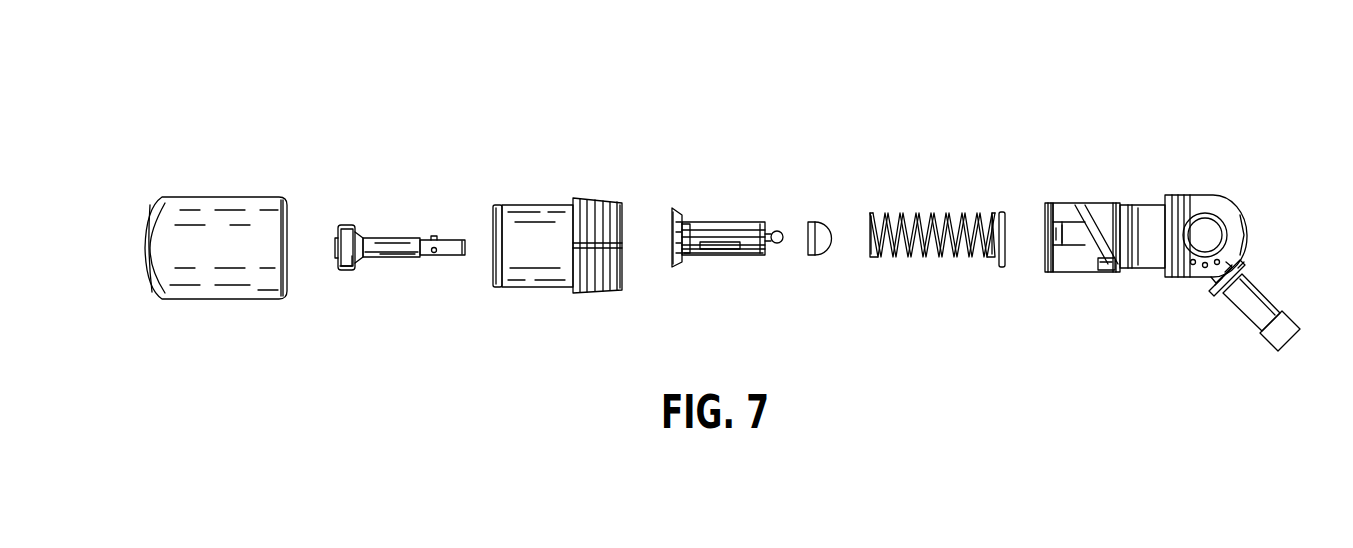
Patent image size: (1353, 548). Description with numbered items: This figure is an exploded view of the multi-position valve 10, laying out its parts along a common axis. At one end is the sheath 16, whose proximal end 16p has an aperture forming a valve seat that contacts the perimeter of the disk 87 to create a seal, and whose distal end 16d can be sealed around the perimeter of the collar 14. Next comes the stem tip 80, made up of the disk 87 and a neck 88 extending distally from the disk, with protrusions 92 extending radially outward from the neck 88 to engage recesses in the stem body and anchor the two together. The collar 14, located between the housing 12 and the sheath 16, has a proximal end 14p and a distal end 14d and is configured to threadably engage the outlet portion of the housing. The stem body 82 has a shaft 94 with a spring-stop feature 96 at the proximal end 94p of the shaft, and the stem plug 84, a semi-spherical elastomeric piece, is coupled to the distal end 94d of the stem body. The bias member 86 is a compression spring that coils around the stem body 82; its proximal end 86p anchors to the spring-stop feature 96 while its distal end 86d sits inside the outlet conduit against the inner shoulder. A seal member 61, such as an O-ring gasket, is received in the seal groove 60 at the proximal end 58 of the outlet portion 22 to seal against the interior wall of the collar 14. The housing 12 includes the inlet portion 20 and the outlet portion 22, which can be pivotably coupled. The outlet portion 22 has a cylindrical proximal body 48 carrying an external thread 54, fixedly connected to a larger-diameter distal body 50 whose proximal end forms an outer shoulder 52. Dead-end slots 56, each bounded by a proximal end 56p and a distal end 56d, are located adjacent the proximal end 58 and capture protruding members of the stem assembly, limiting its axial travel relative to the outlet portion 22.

The multi-position valve 10 is at (480, 110).
The housing 12 is at (1158, 220).
The collar 14 is at (548, 213).
The proximal end of the collar 14p is at (492, 210).
The distal end of the collar 14d is at (618, 215).
The sheath 16 is at (220, 185).
The proximal end of the sheath 16p is at (155, 204).
The distal end of the sheath 16d is at (275, 198).
The inlet portion 20 is at (1276, 278).
The outlet portion 22 is at (1120, 198).
The proximal body 48 is at (1138, 262).
The distal body 50 is at (1232, 212).
The outer shoulder 52 is at (1165, 280).
The external thread 54 is at (1092, 272).
The dead-end slots 56 is at (1073, 230).
The proximal end of the dead-end slot 56p is at (1056, 218).
The distal end of the dead-end slot 56d is at (1082, 228).
The proximal end of the outlet portion 58 is at (1045, 262).
The seal groove 60 is at (1045, 215).
The seal member 61 is at (1000, 212).
The stem tip 80 is at (393, 212).
The stem body 82 is at (735, 210).
The stem plug 84 is at (818, 221).
The bias member 86 is at (905, 262).
The proximal end of the bias member 86p is at (875, 212).
The distal end of the bias member 86d is at (985, 258).
The disk 87 is at (342, 273).
The neck 88 is at (410, 260).
The protrusions 92 is at (433, 254).
The shaft 94 is at (730, 258).
The proximal end of the shaft 94p is at (678, 228).
The distal end of the stem body 94d is at (776, 228).
The spring-stop feature 96 is at (675, 268).